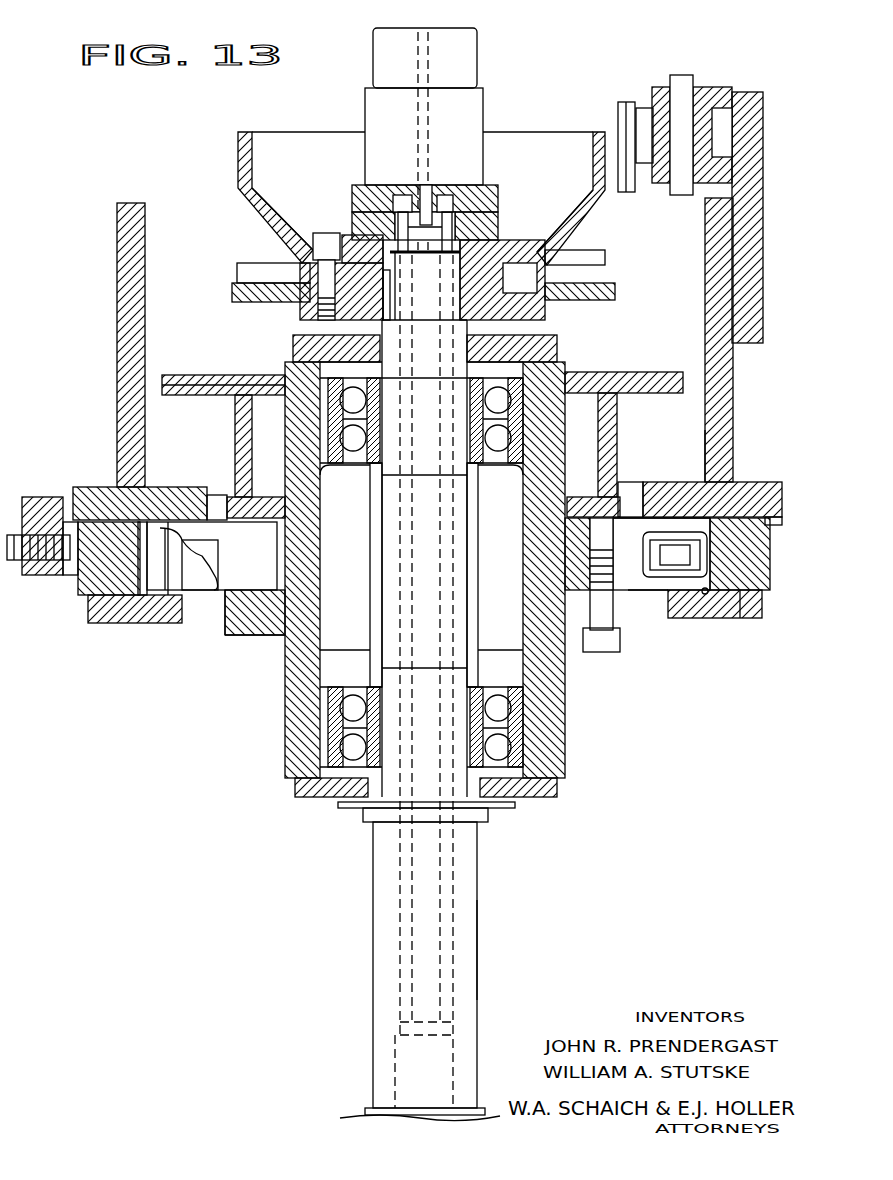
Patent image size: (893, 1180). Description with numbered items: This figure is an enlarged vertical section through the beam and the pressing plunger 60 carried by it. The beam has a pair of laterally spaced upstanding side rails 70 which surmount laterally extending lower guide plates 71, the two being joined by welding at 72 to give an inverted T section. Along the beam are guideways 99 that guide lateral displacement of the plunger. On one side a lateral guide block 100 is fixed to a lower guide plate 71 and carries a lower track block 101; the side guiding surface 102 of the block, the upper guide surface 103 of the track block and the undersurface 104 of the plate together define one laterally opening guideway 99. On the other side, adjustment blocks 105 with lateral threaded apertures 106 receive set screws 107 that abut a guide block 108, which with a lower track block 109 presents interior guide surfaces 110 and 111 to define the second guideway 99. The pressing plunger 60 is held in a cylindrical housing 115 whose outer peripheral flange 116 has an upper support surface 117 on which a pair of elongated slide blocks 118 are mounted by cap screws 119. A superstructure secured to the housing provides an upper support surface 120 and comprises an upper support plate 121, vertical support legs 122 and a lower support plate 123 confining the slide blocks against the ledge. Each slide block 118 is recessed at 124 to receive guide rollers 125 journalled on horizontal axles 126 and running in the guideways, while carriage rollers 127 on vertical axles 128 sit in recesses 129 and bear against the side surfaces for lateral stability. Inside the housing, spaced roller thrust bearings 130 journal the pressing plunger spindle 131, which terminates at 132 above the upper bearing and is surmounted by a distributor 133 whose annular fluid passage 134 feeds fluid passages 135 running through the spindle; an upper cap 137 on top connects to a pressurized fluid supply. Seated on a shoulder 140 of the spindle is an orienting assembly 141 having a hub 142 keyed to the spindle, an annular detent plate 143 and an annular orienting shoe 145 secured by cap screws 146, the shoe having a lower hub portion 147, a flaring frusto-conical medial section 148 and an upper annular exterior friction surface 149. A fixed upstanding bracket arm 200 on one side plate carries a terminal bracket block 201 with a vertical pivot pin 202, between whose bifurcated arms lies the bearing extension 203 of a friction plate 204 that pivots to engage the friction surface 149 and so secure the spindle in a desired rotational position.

The pressing plunger 60 is at (477, 938).
The side rails 70 is at (117, 282).
The lower guide plates 71 is at (108, 490).
The weld 72 is at (740, 486).
The guideways 99 is at (168, 522).
The lateral guide block 100 is at (752, 576).
The lower track block 101 is at (694, 612).
The side guiding surface 102 is at (716, 614).
The upper guide surface 103 is at (664, 598).
The undersurface 104 is at (690, 533).
The adjustment blocks 105 is at (45, 500).
The lateral threaded apertures 106 is at (58, 530).
The set screws 107 is at (48, 565).
The guide block 108 is at (93, 582).
The lower track block 109 is at (122, 605).
The interior guide surface 110 is at (142, 590).
The interior guide surface 111 is at (170, 597).
The cylindrical housing 115 is at (568, 720).
The outer peripheral flange 116 is at (262, 625).
The upper support surface 117 is at (248, 596).
The elongated slide blocks 118 is at (288, 578).
The cap screws 119 is at (592, 652).
The upper support surface 120 is at (230, 375).
The upper support plate 121 is at (212, 392).
The support legs 122 is at (236, 437).
The lower support plate 123 is at (266, 500).
The recess 124 is at (196, 592).
The guide rollers 125 is at (180, 536).
The horizontal axles 126 is at (212, 560).
The carriage rollers 127 is at (705, 592).
The vertical axles 128 is at (722, 478).
The recesses 129 is at (650, 533).
The roller thrust bearings 130 is at (560, 356).
The pressing plunger spindle 131 is at (382, 890).
The spindle upper end 132 is at (400, 268).
The distributor 133 is at (498, 205).
The annular fluid passage 134 is at (456, 202).
The fluid passages 135 is at (424, 518).
The upper cap 137 is at (455, 50).
The shoulder 140 is at (424, 334).
The orienting assembly 141 is at (553, 309).
The hub 142 is at (348, 300).
The annular detent plate 143 is at (236, 284).
The annular orienting shoe 145 is at (264, 220).
The cap screws 146 is at (318, 256).
The lower hub portion 147 is at (472, 242).
The frusto-conical medial section 148 is at (578, 222).
The upper annular exterior friction surface 149 is at (238, 136).
The fixed upstanding bracket arm 200 is at (762, 106).
The terminal bracket block 201 is at (714, 90).
The pivot pin 202 is at (680, 80).
The bearing extension 203 is at (648, 108).
The friction plate 204 is at (618, 112).